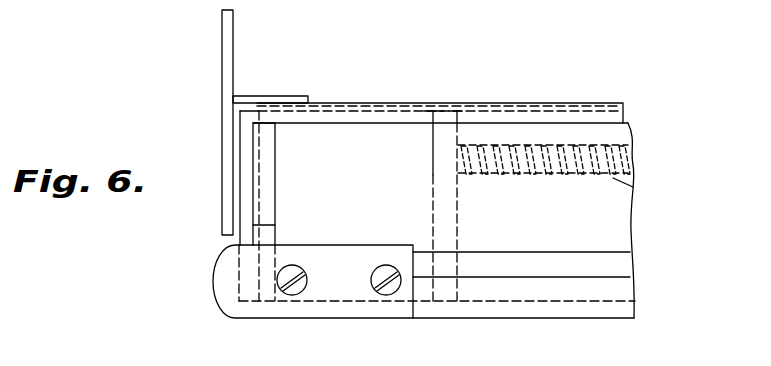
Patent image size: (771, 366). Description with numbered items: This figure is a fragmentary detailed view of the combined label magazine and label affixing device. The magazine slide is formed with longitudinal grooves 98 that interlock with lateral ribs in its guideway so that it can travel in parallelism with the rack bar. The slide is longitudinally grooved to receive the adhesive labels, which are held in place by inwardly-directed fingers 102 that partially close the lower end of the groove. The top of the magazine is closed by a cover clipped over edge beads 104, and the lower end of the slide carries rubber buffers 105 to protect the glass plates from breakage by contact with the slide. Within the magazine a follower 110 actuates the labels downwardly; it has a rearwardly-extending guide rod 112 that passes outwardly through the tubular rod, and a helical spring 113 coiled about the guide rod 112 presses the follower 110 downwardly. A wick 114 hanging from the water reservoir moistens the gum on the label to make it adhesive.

The longitudinal grooves 98 is at (619, 266).
The inwardly-directed fingers 102 is at (270, 162).
The edge beads 104 is at (553, 103).
The rubber buffers 105 is at (235, 320).
The follower 110 is at (460, 122).
The guide rod 112 is at (635, 160).
The helical spring 113 is at (633, 188).
The wick 114 is at (229, 37).